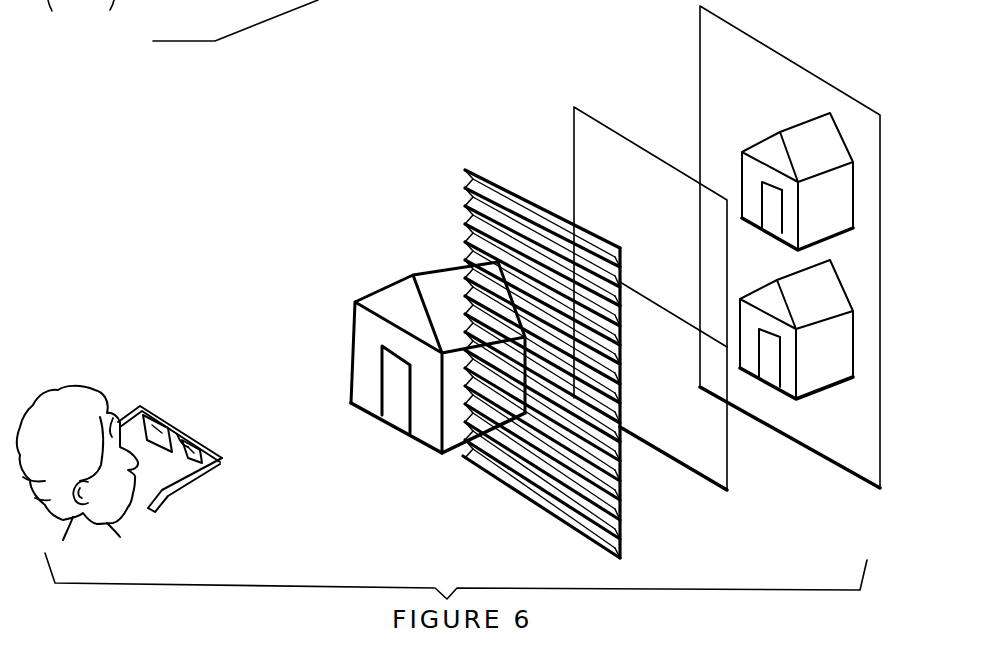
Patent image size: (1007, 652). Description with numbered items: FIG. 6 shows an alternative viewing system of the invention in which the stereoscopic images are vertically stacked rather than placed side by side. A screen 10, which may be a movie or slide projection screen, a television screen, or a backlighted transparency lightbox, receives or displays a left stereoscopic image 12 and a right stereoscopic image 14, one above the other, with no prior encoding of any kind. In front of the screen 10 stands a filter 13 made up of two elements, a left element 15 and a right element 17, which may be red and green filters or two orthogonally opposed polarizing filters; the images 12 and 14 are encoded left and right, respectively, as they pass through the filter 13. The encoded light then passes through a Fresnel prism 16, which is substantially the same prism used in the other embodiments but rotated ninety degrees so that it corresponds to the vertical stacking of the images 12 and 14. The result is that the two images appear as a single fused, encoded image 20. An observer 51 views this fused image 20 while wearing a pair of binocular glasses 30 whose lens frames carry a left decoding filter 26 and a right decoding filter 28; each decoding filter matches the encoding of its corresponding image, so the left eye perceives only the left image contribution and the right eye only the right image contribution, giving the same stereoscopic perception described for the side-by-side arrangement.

The screen 10 is at (696, 60).
The left stereoscopic image 12 is at (808, 132).
The filter 13 is at (666, 433).
The right stereoscopic image 14 is at (828, 366).
The left element 15 is at (582, 140).
The Fresnel prism 16 is at (456, 192).
The right element 17 is at (712, 440).
The fused image 20 is at (355, 318).
The left filter 26 is at (153, 430).
The right filter 28 is at (190, 457).
The binocular glasses 30 is at (212, 478).
The observer 51 is at (75, 402).